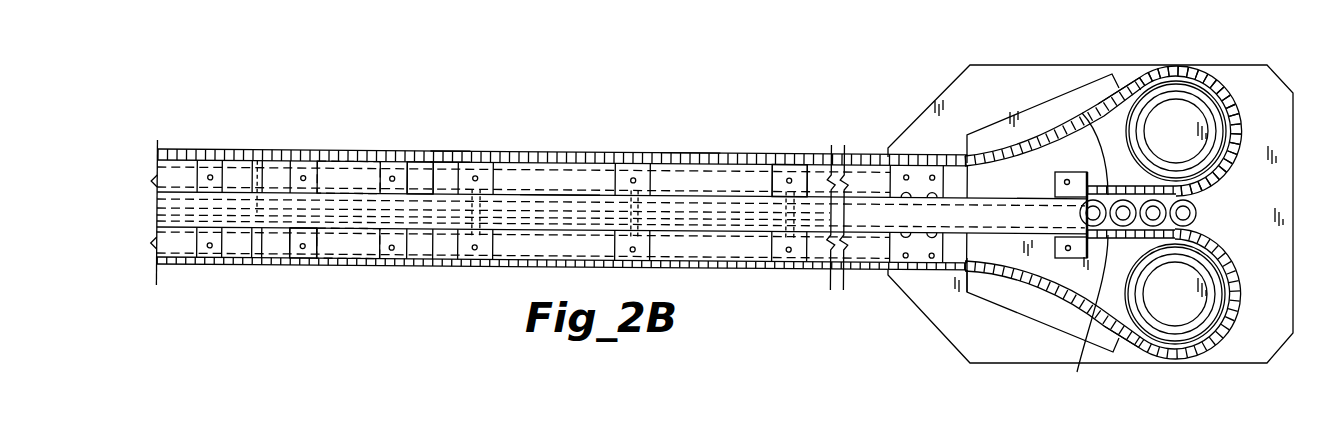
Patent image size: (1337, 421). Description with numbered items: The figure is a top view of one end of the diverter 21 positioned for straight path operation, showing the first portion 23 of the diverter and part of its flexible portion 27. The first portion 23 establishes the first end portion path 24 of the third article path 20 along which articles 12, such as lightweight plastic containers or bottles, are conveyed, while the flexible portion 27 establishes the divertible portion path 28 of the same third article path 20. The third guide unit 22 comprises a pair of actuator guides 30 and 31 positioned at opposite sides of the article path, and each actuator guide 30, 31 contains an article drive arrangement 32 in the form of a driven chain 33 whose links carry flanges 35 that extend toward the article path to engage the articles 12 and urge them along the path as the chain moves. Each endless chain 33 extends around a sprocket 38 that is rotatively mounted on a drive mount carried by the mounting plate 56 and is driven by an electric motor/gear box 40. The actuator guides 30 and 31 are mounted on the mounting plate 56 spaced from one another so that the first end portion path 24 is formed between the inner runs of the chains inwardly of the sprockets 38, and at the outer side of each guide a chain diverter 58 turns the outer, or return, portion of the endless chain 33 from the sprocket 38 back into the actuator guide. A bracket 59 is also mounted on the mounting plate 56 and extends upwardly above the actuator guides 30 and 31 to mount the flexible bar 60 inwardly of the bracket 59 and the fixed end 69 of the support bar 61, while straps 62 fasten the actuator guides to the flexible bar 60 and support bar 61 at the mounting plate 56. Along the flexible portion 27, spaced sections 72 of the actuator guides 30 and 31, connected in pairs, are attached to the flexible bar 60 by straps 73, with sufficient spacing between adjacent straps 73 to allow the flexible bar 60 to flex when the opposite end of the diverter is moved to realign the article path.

The articles 12 is at (1185, 215).
The third article path 20 is at (1077, 115).
The diverter 21 is at (418, 189).
The third guide unit 22 is at (689, 140).
The first portion 23 is at (1085, 315).
The first end portion path 24 is at (1093, 318).
The flexible portion 27 is at (263, 160).
The divertible portion path 28 is at (337, 181).
The actuator guide 30 is at (1123, 83).
The actuator guide 31 is at (1127, 347).
The article drive arrangement 32 is at (1193, 98).
The driven chain 33 is at (1218, 97).
The flanges 35 is at (1186, 40).
The sprocket 38 is at (1215, 130).
The electric motor/gear box 40 is at (1190, 148).
The mounting plate 56 is at (925, 316).
The chain diverter 58 is at (1058, 140).
The bracket 59 is at (970, 273).
The flexible bar 60 is at (752, 203).
The support bar 61 is at (443, 151).
The straps 62 is at (798, 165).
The fixed end 69 is at (561, 189).
The spaced sections 72 is at (303, 257).
The straps 73 is at (305, 232).